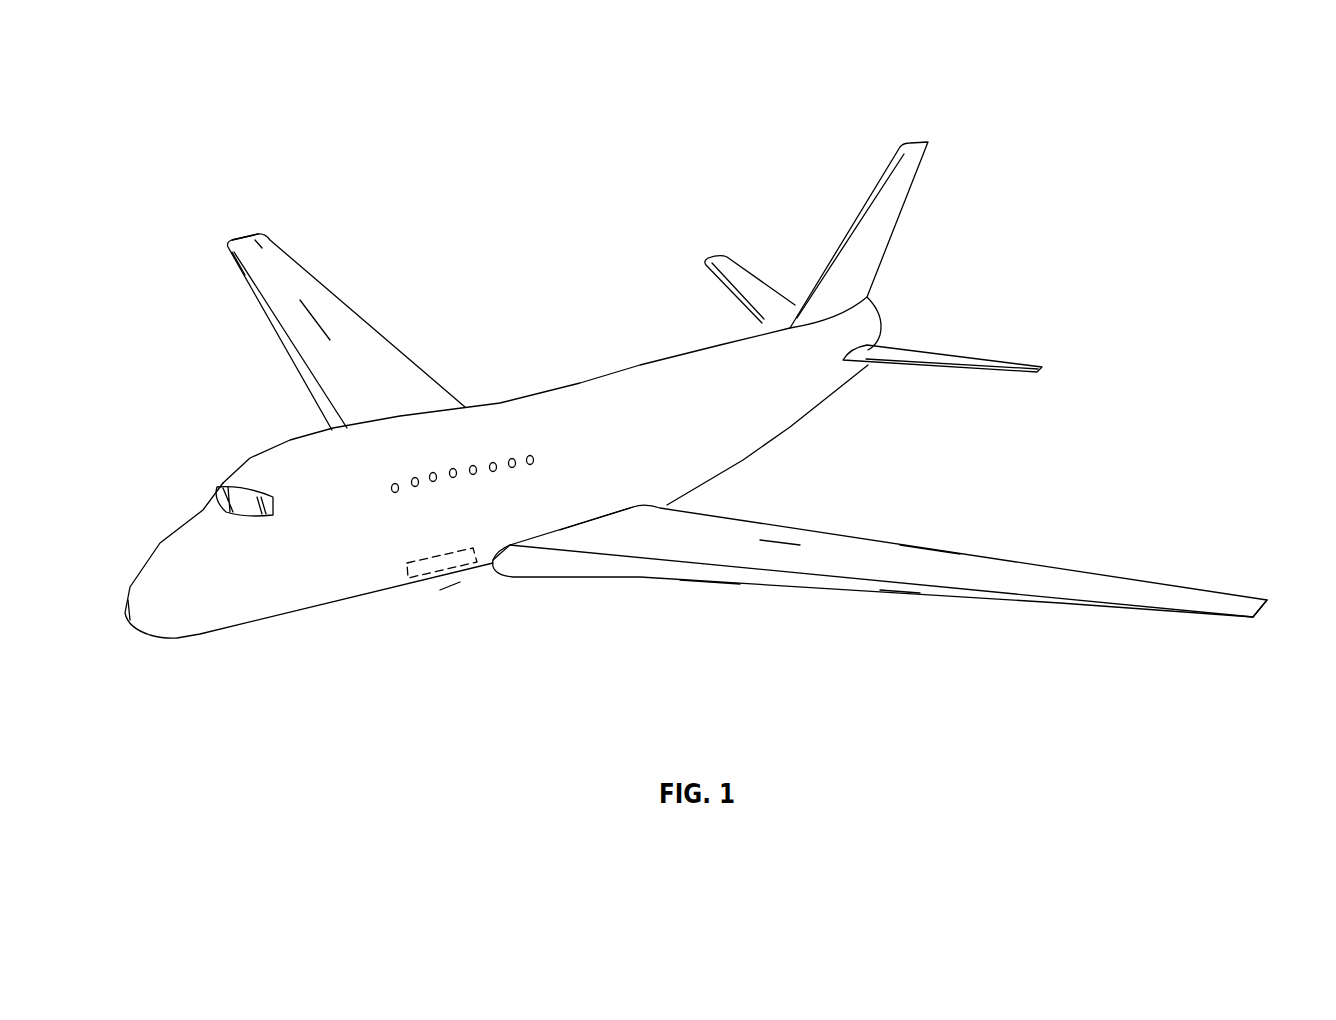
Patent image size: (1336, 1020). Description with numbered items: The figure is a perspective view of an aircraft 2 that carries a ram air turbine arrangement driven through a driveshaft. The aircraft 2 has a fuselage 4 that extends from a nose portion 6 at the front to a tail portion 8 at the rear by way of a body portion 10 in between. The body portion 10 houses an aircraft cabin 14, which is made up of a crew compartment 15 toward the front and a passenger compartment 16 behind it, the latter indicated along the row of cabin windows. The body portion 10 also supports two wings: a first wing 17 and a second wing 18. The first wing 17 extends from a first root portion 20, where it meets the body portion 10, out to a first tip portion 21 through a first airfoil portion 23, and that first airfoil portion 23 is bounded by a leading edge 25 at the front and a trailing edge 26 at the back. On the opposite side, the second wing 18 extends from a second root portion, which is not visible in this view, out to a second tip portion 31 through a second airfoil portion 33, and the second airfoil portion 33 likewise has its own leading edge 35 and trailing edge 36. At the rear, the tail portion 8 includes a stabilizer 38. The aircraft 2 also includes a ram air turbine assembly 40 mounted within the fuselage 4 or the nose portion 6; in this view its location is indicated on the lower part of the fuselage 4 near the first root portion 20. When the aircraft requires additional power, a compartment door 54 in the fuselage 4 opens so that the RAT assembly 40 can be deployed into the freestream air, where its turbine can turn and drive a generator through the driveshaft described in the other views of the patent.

The aircraft 2 is at (119, 461).
The fuselage 4 is at (279, 613).
The nose portion 6 is at (136, 611).
The tail portion 8 is at (827, 388).
The body portion 10 is at (708, 467).
The aircraft cabin 14 is at (503, 509).
The crew compartment 15 is at (218, 485).
The passenger compartment 16 is at (538, 420).
The first wing 17 is at (900, 594).
The second wing 18 is at (274, 249).
The first root portion 20 is at (586, 517).
The first tip portion 21 is at (1265, 608).
The first airfoil portion 23 is at (778, 535).
The leading edge 25 is at (708, 565).
The trailing edge 26 is at (927, 545).
The second tip portion 31 is at (240, 237).
The second airfoil portion 33 is at (302, 283).
The leading edge 35 is at (240, 268).
The trailing edge 36 is at (327, 285).
The stabilizer 38 is at (923, 338).
The ram air turbine (RAT) assembly 40 is at (450, 601).
The compartment door 54 is at (468, 575).